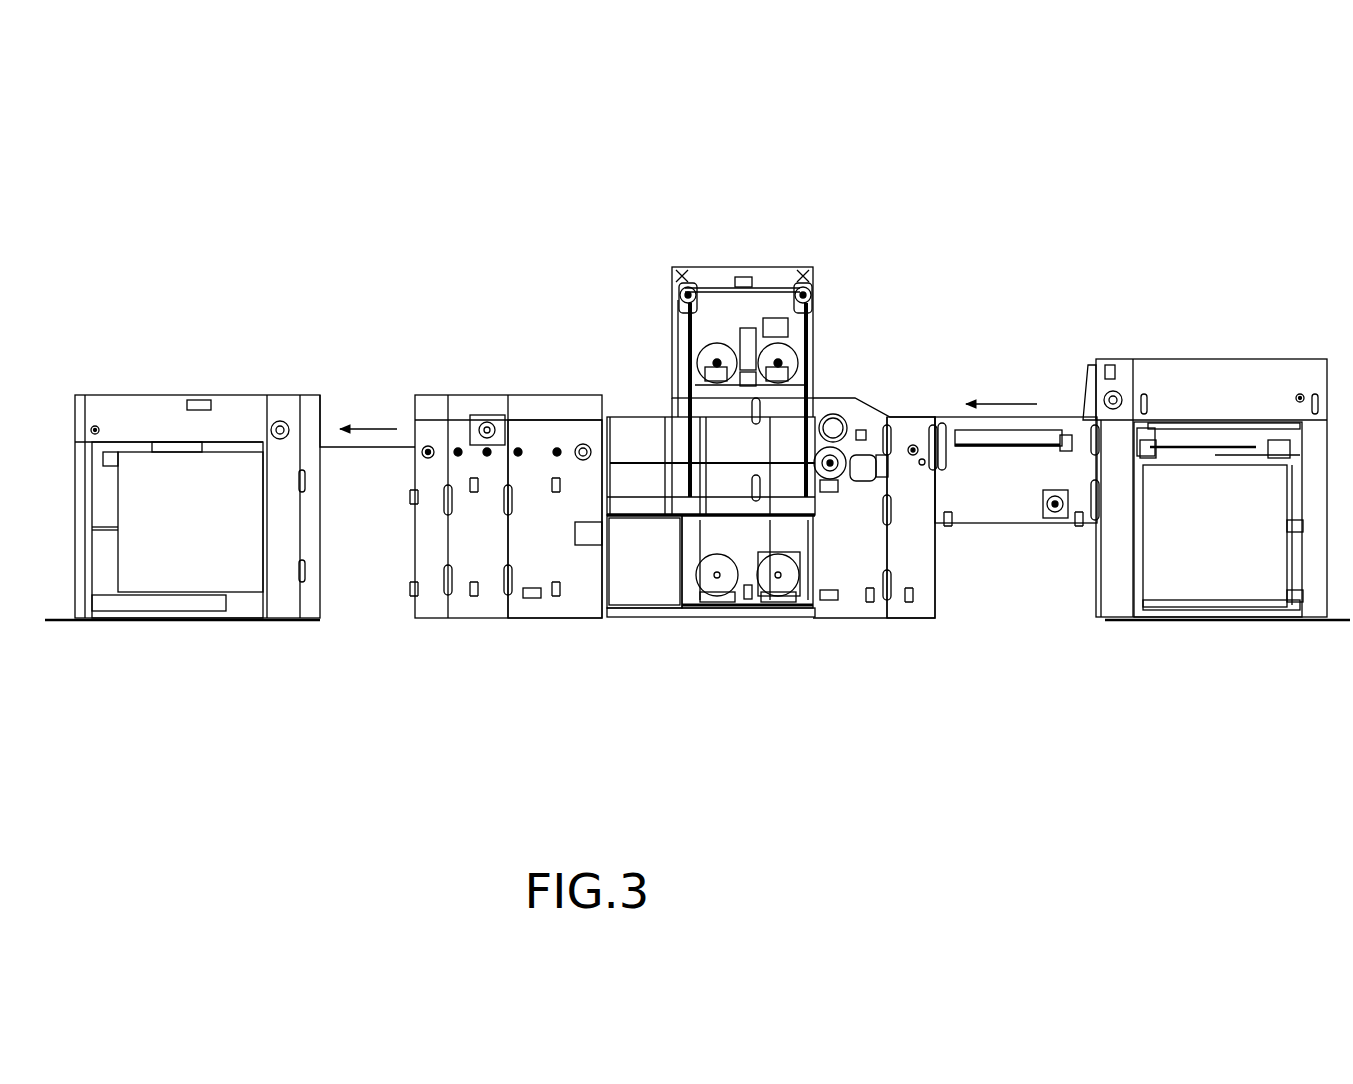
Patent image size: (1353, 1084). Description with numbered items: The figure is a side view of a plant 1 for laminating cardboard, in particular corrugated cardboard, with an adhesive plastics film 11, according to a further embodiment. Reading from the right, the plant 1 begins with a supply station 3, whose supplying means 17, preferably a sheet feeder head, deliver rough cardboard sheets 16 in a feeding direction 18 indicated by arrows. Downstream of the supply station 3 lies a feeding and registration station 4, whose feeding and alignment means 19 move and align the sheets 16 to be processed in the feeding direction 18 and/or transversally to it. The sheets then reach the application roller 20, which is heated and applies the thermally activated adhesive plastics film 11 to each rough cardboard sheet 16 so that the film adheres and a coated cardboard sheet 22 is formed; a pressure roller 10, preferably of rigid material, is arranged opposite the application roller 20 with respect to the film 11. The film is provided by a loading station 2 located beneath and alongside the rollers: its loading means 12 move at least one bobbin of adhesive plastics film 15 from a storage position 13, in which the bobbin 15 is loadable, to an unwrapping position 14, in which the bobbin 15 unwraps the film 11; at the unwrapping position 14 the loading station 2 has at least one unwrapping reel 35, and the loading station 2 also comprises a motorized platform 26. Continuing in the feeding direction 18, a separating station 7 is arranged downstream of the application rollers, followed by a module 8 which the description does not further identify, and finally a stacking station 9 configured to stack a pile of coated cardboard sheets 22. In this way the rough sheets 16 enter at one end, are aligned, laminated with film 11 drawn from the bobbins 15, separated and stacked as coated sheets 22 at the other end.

The plant for laminating cardboard 1 is at (396, 143).
The loading station 2 is at (759, 646).
The supply station 3 is at (1205, 476).
The feeding and registration station 4 is at (1058, 376).
The separating station 7 is at (548, 633).
The outfeed module 8 is at (406, 633).
The stacking station 9 is at (185, 634).
The pressure roller 10 is at (901, 533).
The adhesive plastics film 11 is at (783, 473).
The loading means 12 is at (680, 585).
The storage position 13 is at (694, 633).
The unwrapping position 14 is at (655, 275).
The bobbin of adhesive plastics film 15 is at (715, 590).
The rough cardboard sheets 16 is at (1212, 570).
The supplying means 17 is at (1177, 393).
The feeding direction 18 is at (371, 425).
The feeding and alignment means 19 is at (916, 544).
The application roller 20 is at (836, 415).
The coated cardboard sheet 22 is at (145, 560).
The motorized platform 26 is at (762, 608).
The unwrapping reel 35 is at (716, 356).